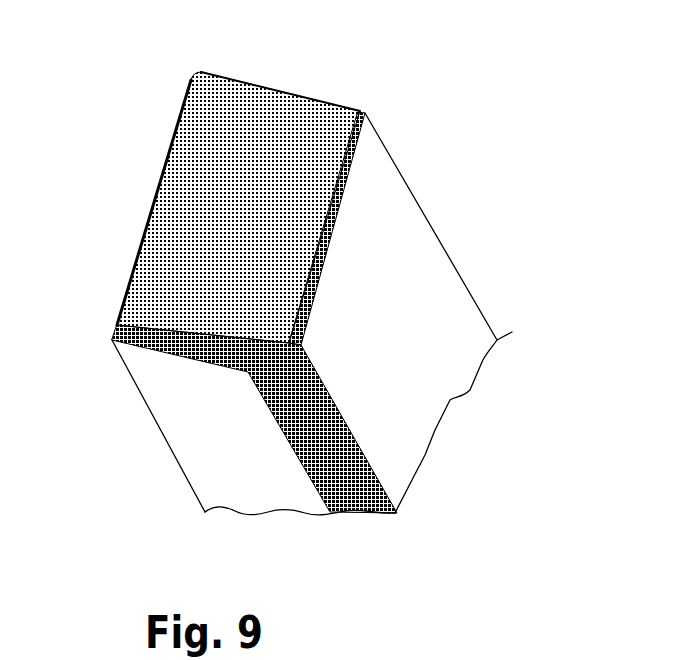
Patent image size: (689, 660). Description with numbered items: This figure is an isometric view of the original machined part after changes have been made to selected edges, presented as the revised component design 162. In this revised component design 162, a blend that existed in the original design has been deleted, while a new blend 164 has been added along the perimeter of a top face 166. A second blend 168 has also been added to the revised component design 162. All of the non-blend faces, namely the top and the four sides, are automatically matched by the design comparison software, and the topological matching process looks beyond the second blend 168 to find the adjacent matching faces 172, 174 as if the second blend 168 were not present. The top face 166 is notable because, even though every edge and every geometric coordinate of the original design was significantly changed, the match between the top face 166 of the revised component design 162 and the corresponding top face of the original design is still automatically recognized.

The revised component design 162 is at (447, 252).
The blend 164 is at (160, 183).
The top face 166 is at (307, 108).
The second blend 168 is at (380, 482).
The adjacent matching face 172 is at (182, 418).
The adjacent matching face 174 is at (443, 333).